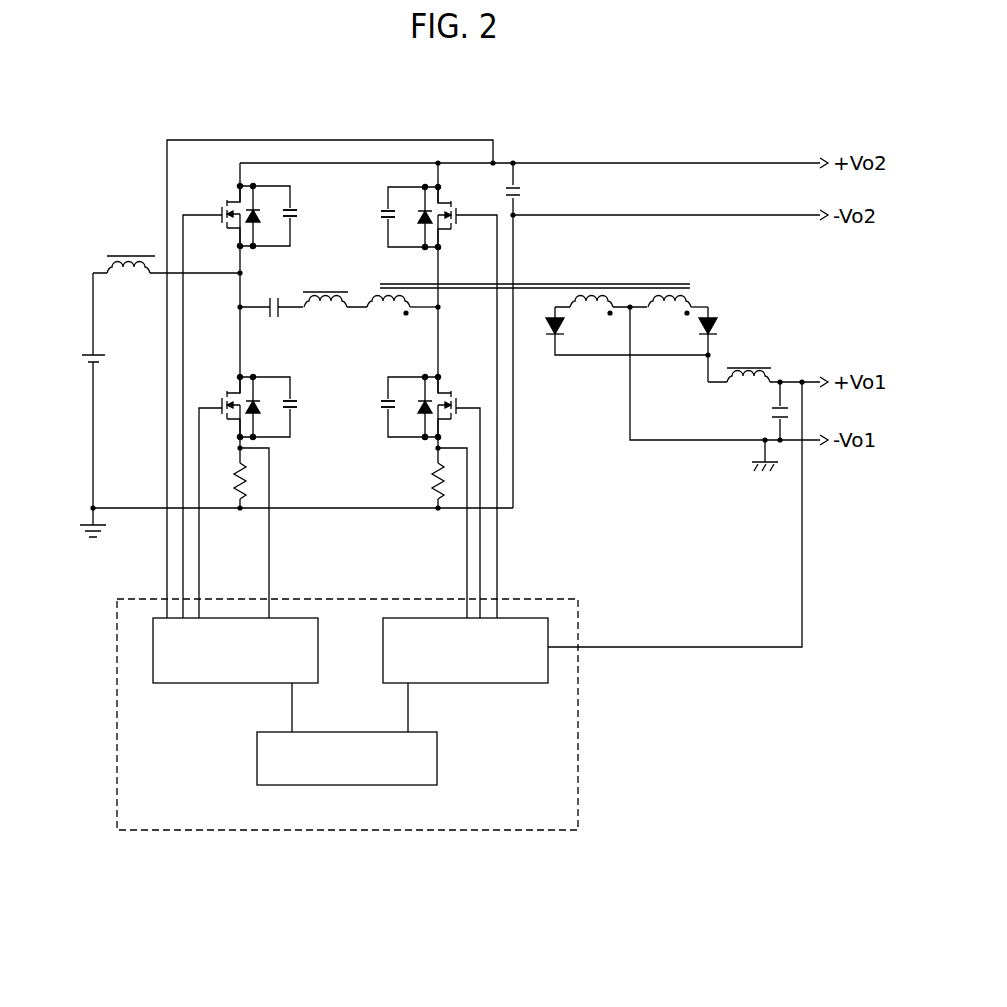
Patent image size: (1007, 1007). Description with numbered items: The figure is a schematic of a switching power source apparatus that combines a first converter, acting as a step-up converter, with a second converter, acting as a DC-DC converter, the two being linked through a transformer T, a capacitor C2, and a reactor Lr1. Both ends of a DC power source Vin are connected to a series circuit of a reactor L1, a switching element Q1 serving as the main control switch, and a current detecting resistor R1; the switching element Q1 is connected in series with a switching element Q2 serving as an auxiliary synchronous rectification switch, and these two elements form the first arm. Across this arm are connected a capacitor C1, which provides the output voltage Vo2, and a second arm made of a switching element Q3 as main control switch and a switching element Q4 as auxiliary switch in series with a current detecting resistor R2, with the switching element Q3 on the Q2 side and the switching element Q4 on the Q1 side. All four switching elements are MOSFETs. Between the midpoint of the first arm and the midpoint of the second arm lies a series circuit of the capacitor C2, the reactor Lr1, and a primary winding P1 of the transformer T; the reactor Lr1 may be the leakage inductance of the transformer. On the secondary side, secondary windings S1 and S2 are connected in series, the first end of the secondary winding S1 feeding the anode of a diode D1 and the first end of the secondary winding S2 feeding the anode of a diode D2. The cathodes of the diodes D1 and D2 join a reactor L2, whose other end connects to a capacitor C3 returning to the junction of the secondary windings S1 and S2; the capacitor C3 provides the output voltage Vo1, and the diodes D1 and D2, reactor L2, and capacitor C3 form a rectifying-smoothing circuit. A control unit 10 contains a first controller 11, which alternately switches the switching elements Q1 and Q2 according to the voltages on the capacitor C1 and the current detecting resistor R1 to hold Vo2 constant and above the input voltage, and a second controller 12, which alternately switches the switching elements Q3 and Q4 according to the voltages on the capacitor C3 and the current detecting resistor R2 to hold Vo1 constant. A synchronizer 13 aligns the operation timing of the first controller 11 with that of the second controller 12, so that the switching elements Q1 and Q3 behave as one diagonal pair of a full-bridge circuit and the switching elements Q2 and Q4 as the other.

The control unit 10 is at (578, 733).
The first controller 11 is at (195, 684).
The second controller 12 is at (505, 684).
The synchronizer 13 is at (437, 773).
The switching element Q1 is at (219, 402).
The switching element Q2 is at (219, 211).
The switching element Q3 is at (458, 211).
The switching element Q4 is at (458, 402).
The transformer T is at (535, 271).
The reactor L1 is at (166, 252).
The reactor L2 is at (764, 363).
The reactor Lr1 is at (335, 285).
The capacitor C1 is at (531, 207).
The capacitor C2 is at (271, 293).
The capacitor C3 is at (766, 411).
The primary winding P1 is at (402, 319).
The secondary winding S1 is at (678, 318).
The secondary winding S2 is at (601, 318).
The diode D1 is at (723, 344).
The diode D2 is at (612, 331).
The current detecting resistor R1 is at (226, 481).
The current detecting resistor R2 is at (424, 481).
The DC power source Vin is at (76, 390).